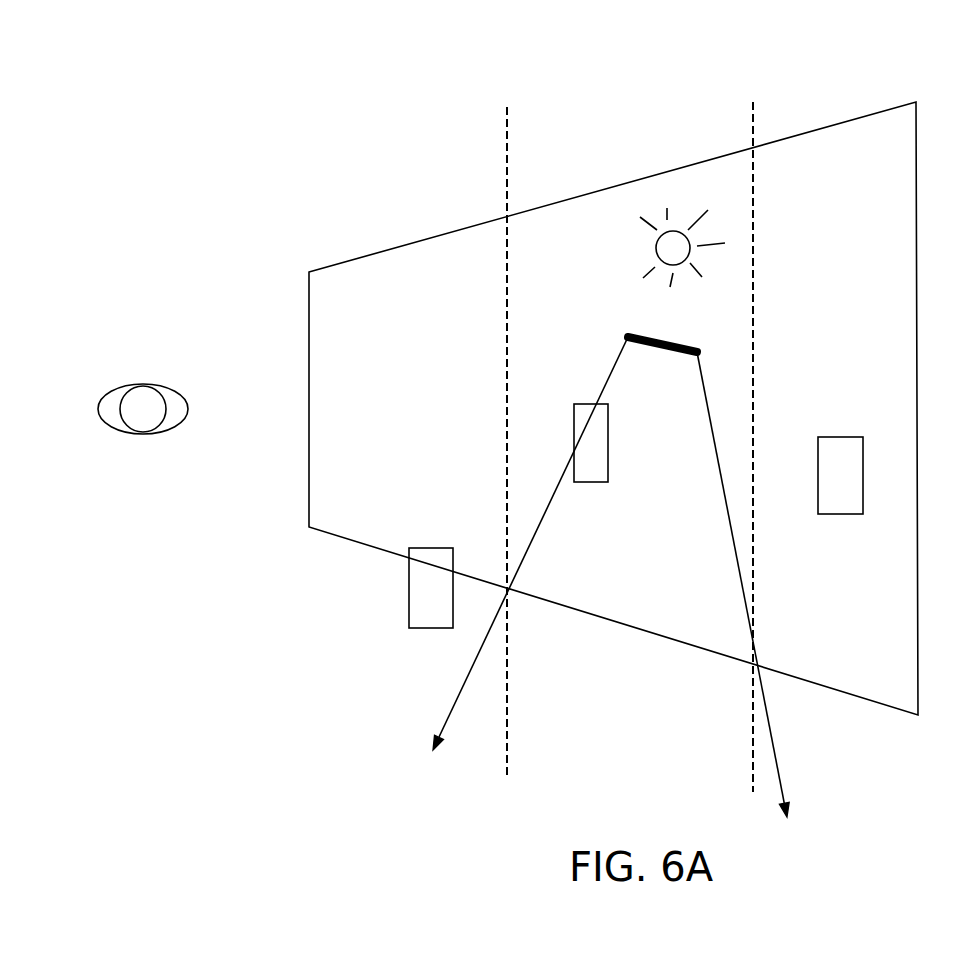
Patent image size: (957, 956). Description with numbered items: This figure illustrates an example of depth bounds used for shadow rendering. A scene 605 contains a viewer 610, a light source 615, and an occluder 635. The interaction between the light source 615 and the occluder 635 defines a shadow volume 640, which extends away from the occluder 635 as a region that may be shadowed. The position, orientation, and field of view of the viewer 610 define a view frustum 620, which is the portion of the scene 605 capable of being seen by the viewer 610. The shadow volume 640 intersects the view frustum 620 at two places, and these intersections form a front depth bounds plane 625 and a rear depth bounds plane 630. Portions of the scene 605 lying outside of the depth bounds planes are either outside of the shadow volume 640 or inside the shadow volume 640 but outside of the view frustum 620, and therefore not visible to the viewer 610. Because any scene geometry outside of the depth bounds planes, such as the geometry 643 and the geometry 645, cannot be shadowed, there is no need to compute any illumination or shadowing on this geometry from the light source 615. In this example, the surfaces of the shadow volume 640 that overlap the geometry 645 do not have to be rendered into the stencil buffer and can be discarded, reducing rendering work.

The scene 605 is at (279, 72).
The viewer 610 is at (163, 375).
The light source 615 is at (653, 248).
The view frustum 620 is at (843, 696).
The front depth bounds plane 625 is at (503, 132).
The rear depth bounds plane 630 is at (762, 112).
The occluder 635 is at (627, 335).
The shadow volume 640 is at (617, 548).
The geometry 643 is at (428, 591).
The geometry 645 is at (846, 455).